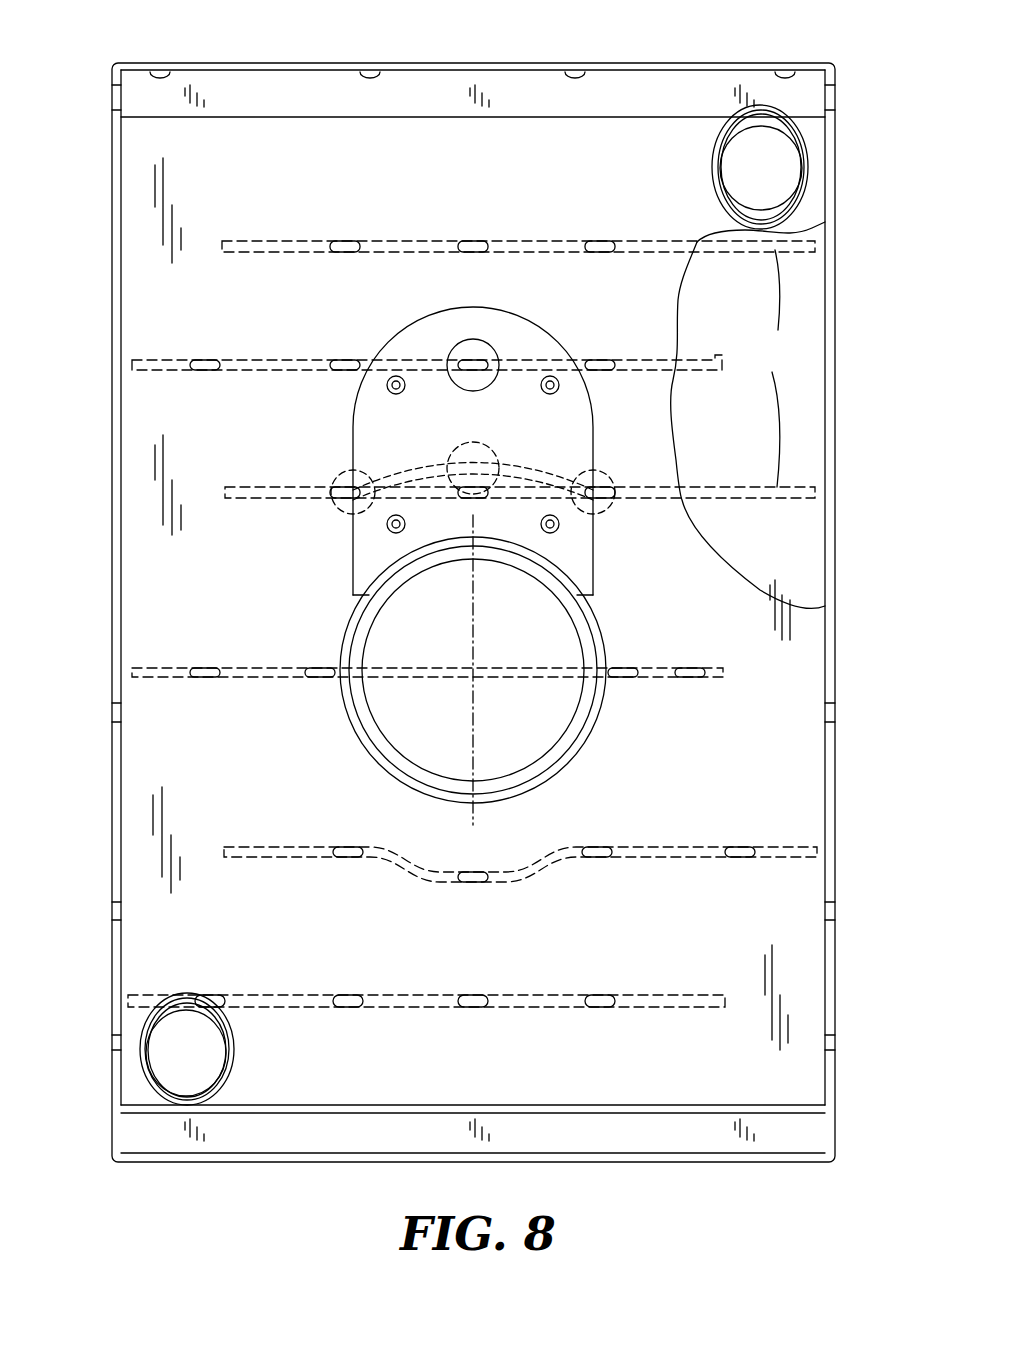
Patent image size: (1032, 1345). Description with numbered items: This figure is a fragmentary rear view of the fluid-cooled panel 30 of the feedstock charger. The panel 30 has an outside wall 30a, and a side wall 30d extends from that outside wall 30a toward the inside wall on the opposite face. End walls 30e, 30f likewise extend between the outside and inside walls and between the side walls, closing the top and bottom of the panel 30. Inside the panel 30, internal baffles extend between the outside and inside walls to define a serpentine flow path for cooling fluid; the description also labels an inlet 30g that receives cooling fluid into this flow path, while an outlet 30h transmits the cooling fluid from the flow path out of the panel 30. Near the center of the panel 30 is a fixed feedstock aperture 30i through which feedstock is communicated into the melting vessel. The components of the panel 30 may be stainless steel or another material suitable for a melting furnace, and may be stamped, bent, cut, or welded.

The fluid-cooled panel 30 is at (835, 48).
The outside wall 30a is at (207, 153).
The side wall 30d is at (836, 248).
The end wall 30e is at (222, 63).
The end wall 30f is at (222, 1162).
The inlet 30g is at (722, 175).
The outlet 30h is at (226, 1045).
The fixed feedstock aperture 30i is at (378, 622).